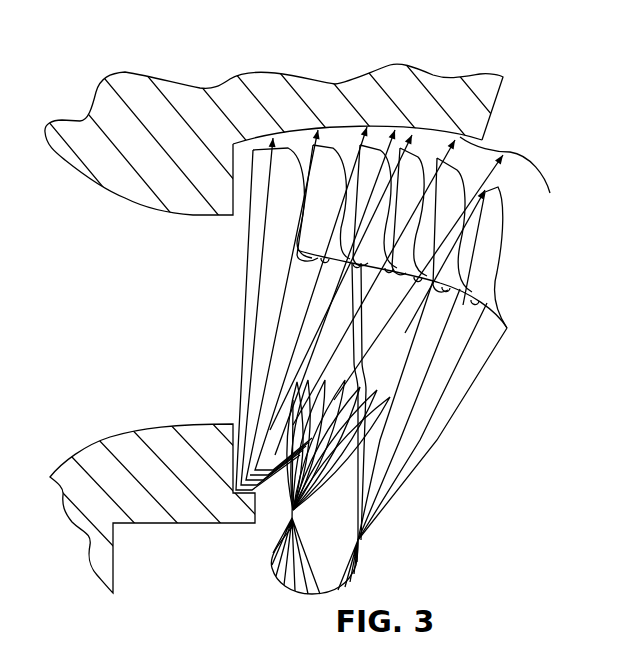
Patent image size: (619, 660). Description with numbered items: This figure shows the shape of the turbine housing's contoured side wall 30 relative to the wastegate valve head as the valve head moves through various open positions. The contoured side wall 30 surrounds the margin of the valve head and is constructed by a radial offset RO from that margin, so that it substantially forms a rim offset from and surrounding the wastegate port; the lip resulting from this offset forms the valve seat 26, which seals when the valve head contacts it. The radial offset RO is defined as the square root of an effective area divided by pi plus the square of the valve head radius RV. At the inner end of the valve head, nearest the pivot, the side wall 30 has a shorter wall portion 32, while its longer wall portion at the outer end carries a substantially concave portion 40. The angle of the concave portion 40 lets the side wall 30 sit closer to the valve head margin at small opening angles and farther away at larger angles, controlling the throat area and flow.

The valve seat 26 is at (237, 208).
The contoured side wall 30 is at (309, 139).
The shorter wall portion 32 is at (255, 523).
The concave portion 40 is at (403, 170).
The radial offset RO is at (395, 144).
The radius of the valve head RV is at (466, 230).